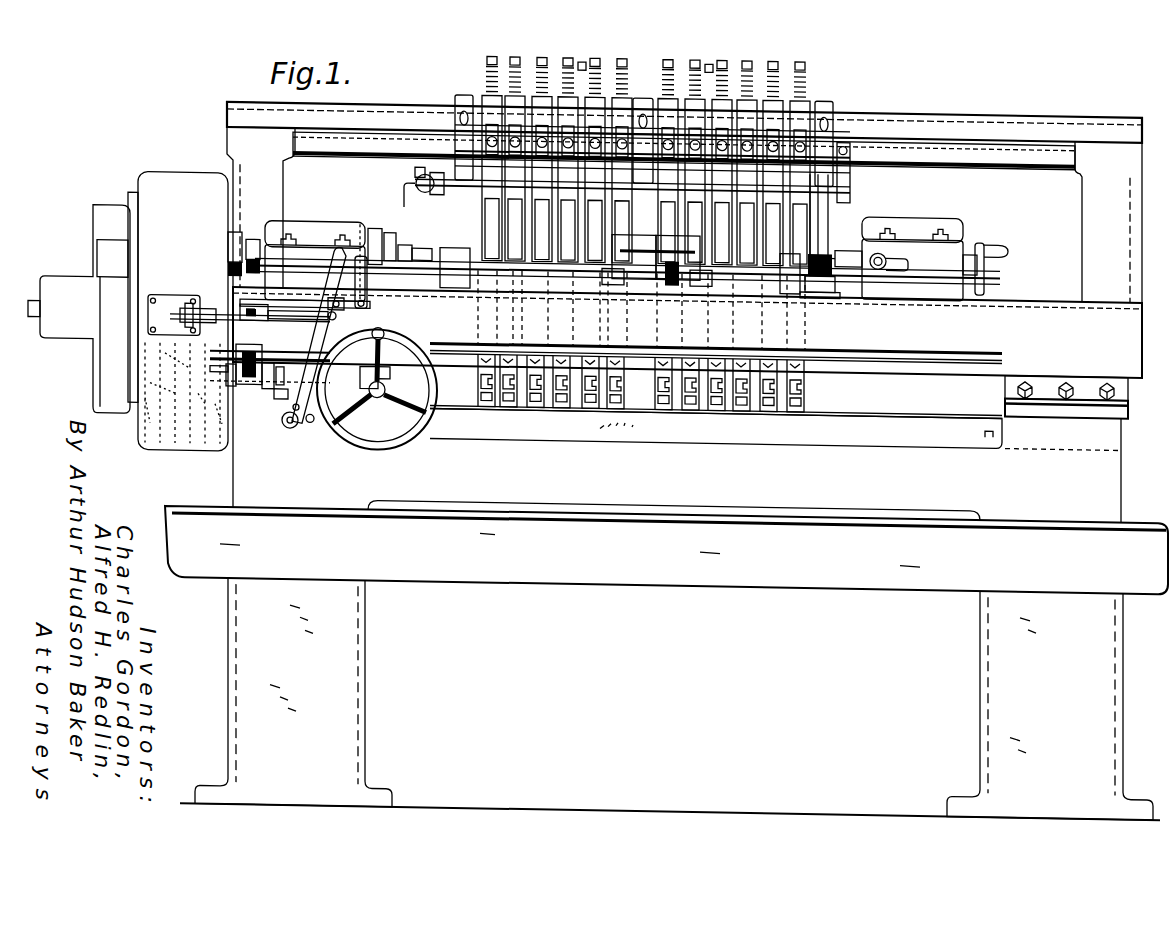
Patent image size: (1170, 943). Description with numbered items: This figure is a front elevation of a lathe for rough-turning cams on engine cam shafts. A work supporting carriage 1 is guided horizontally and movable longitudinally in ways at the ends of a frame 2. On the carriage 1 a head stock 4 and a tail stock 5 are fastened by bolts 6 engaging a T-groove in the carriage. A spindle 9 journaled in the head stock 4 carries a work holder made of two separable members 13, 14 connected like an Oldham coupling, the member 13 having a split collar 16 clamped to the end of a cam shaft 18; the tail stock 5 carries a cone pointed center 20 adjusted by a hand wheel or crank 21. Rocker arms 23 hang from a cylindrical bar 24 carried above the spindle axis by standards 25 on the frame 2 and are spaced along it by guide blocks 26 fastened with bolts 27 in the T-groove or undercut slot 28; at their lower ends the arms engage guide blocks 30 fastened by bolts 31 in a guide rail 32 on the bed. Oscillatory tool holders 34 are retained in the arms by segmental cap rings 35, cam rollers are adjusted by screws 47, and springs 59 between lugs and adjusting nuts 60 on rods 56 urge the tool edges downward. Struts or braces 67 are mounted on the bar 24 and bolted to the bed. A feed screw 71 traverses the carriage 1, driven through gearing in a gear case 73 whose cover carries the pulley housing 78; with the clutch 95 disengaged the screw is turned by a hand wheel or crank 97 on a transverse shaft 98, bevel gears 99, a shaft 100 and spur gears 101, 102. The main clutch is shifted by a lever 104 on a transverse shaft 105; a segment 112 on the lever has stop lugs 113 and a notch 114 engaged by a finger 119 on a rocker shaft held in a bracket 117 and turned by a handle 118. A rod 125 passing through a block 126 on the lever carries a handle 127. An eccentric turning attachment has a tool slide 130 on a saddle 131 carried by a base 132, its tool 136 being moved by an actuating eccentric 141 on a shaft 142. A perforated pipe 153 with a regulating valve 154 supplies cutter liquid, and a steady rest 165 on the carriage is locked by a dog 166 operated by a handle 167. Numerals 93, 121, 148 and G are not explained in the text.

The work supporting carriage 1 is at (687, 353).
The frame 2 is at (670, 590).
The head stock 4 is at (315, 261).
The tail stock 5 is at (912, 259).
The bolts 6 is at (288, 228).
The spindle 9 is at (240, 228).
The separable member of work holder 13 is at (390, 226).
The separable member of floating coupling 14 is at (374, 222).
The split collar 16 is at (412, 246).
The cam shaft 18 is at (432, 247).
The cone pointed center 20 is at (838, 240).
The hand wheel or crank 21 is at (988, 255).
The rocker arms 23 is at (490, 188).
The cylindrical bar 24 is at (925, 99).
The standards 25 is at (288, 158).
The guide blocks 26 is at (773, 146).
The bolts 27 is at (668, 146).
The T-groove or undercut slot 28 is at (990, 146).
The guide blocks 30 is at (480, 377).
The bolts 31 is at (480, 390).
The guide rail 32 is at (716, 429).
The tool holders 34 is at (515, 222).
The segmental cap rings 35 is at (595, 222).
The screws 47 is at (478, 364).
The rods 56 is at (542, 52).
The springs 59 is at (574, 62).
The adjusting nuts 60 is at (700, 62).
The struts or braces 67 is at (456, 92).
The feed screw 71 is at (181, 315).
The gear case 73 is at (178, 169).
The pulley housing 78 is at (110, 203).
The gear 93 is at (154, 410).
The clutch 95 is at (163, 395).
The hand wheel or crank 97 is at (393, 334).
The transverse shaft 98 is at (372, 392).
The bevel gears 99 is at (312, 417).
The shaft 100 is at (207, 419).
The spur gear 101 is at (192, 406).
The spur gear 102 is at (177, 371).
The lever 104 is at (318, 290).
The transverse shaft 105 is at (284, 428).
The segment 112 is at (298, 405).
The stop lugs 113 is at (268, 384).
The notch 114 is at (271, 407).
The bracket 117 is at (255, 375).
The handle 118 is at (258, 336).
The finger 119 is at (302, 318).
The bracket 121 is at (248, 340).
The rod 125 is at (336, 296).
The block 126 is at (336, 256).
The handle 127 is at (367, 292).
The tool supporting slide or holder 130 is at (825, 240).
The saddle 131 is at (818, 278).
The base or supporting block 132 is at (840, 283).
The tool 136 is at (666, 550).
The actuating eccentric 141 is at (790, 280).
The shaft 142 is at (452, 280).
The block 148 is at (255, 305).
The perforated pipe 153 is at (850, 176).
The controlling and regulating valve 154 is at (412, 172).
The steady rest 165 is at (620, 272).
The dog 166 is at (655, 272).
The handle 167 is at (672, 274).
The oil cups G is at (890, 209).